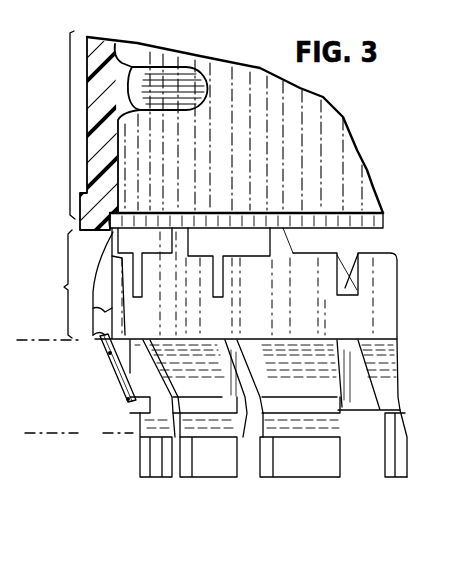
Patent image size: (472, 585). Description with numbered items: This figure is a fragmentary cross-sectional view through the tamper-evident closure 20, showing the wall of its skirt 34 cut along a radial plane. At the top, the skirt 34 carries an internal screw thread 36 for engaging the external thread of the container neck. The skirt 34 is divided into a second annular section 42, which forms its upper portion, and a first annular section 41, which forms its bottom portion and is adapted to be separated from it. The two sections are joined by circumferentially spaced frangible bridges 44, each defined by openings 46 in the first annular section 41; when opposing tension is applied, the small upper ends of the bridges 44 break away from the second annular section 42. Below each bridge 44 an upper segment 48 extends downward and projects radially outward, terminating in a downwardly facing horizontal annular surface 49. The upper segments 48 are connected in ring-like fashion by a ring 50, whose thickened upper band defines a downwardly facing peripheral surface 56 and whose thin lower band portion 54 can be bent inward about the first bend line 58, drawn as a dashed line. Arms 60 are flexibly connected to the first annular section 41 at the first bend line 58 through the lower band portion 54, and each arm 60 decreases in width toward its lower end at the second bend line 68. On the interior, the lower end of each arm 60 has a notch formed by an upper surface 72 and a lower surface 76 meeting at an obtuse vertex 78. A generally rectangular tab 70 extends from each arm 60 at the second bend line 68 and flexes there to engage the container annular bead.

The closure 20 is at (182, 17).
The skirt 34 is at (107, 138).
The internal screw thread 36 is at (198, 88).
The first annular section 41 is at (64, 287).
The second annular section 42 is at (70, 112).
The frangible bridges 44 is at (293, 253).
The openings 46 is at (155, 242).
The upper segments 48 is at (100, 293).
The annular surface 49 is at (86, 360).
The ring 50 is at (124, 348).
The thin lower band portion 54 is at (127, 395).
The peripheral surface 56 is at (95, 341).
The first bend line 58 is at (30, 338).
The arms 60 is at (205, 352).
The second bend line 68 is at (32, 434).
The tab 70 is at (210, 468).
The upper surface 72 is at (262, 397).
The lower surface 76 is at (247, 432).
The vertex 78 is at (313, 400).